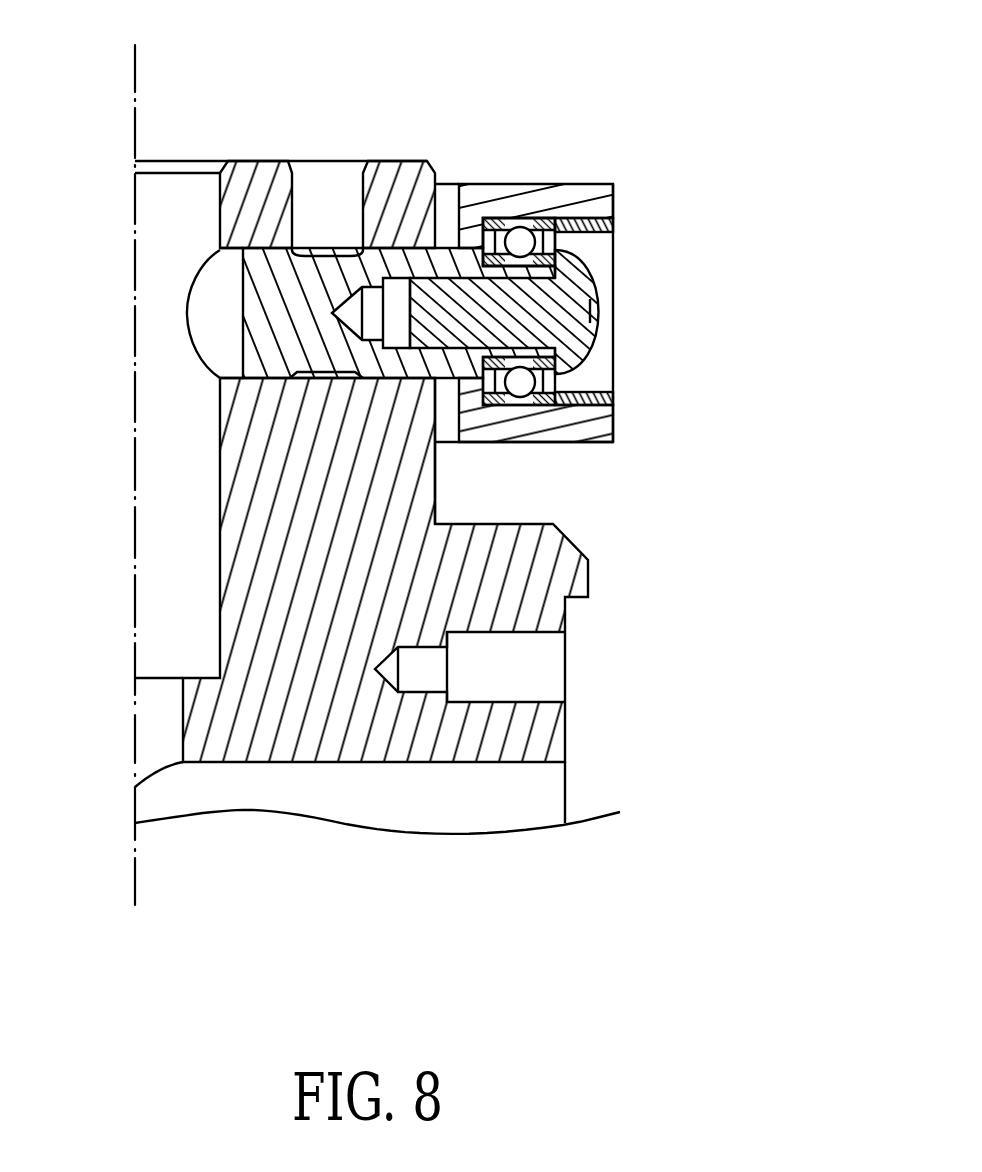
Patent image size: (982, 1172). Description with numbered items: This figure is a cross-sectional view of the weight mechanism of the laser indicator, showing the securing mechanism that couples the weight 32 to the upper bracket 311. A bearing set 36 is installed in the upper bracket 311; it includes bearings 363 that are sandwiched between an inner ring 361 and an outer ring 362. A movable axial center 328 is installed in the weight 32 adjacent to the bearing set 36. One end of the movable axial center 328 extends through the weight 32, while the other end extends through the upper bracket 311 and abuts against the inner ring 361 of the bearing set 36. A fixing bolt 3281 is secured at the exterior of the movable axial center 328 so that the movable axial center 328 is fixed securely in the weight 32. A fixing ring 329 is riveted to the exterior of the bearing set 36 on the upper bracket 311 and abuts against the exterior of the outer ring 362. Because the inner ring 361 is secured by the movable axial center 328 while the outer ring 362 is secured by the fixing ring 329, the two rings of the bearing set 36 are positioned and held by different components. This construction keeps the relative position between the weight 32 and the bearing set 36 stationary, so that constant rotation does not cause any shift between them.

The weight 32 is at (588, 578).
The upper bracket 311 is at (613, 430).
The movable axial center 328 is at (315, 272).
The fixing bolt 3281 is at (590, 312).
The fixing ring 329 is at (613, 226).
The bearing set 36 is at (603, 92).
The inner ring 361 is at (496, 218).
The outer ring 362 is at (537, 218).
The bearings 363 is at (517, 387).